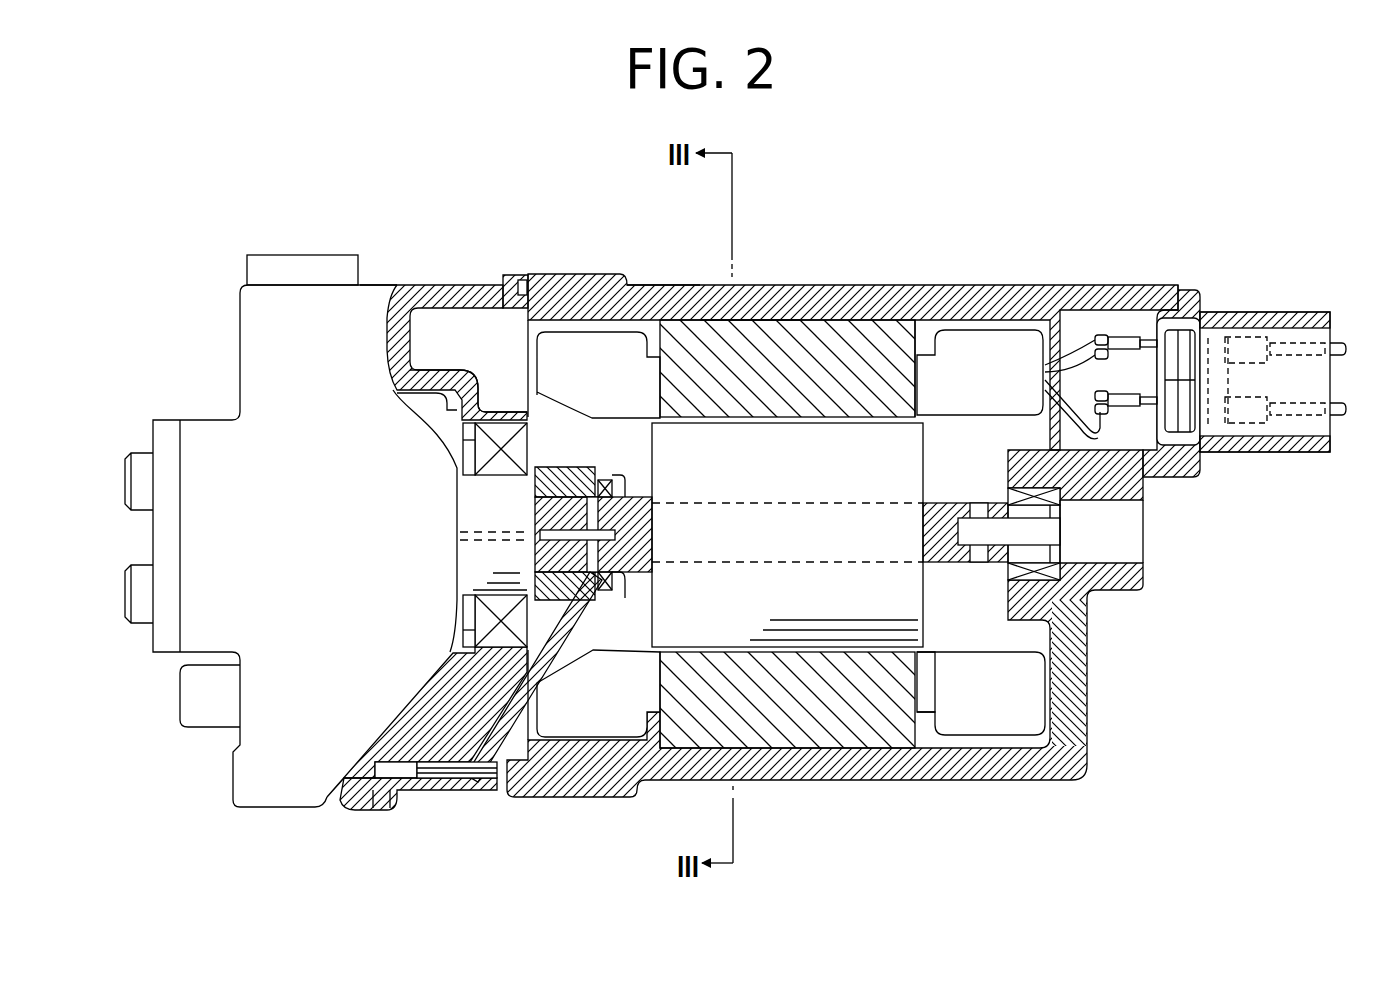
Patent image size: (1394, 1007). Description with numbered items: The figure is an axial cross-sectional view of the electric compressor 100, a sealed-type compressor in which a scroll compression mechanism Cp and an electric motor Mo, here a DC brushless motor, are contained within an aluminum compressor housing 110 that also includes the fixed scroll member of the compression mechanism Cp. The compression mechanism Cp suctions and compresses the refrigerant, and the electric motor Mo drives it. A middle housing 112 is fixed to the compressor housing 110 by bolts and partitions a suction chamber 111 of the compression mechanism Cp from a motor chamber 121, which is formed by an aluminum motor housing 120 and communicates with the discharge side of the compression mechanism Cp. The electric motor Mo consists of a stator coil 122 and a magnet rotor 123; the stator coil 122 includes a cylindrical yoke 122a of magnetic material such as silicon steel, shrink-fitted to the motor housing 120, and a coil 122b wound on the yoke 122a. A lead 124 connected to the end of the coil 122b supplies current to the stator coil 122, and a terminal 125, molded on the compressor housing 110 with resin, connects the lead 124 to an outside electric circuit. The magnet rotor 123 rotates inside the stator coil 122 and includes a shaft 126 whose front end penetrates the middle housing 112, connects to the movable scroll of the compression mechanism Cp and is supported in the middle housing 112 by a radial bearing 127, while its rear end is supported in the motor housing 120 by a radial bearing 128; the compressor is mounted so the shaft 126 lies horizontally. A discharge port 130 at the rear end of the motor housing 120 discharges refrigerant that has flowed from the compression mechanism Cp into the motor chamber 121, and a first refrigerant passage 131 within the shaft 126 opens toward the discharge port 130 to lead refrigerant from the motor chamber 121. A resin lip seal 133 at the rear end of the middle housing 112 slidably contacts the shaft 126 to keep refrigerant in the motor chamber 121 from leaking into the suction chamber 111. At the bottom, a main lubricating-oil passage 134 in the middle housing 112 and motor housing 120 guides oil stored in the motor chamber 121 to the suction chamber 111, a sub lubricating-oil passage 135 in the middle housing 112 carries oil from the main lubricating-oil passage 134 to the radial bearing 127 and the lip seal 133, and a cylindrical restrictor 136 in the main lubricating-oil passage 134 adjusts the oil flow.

The electric compressor 100 is at (659, 270).
The compressor housing 110 is at (290, 285).
The suction chamber 111 is at (487, 290).
The middle housing 112 is at (428, 290).
The motor housing 120 is at (703, 285).
The motor chamber 121 is at (578, 415).
The stator coil 122 is at (849, 333).
The cylindrical yoke 122a is at (815, 335).
The coil 122b is at (987, 348).
The magnet rotor 123 is at (748, 437).
The lead 124 is at (1165, 380).
The terminal 125 is at (1345, 410).
The shaft 126 is at (920, 672).
The radial bearing 127 is at (545, 745).
The radial bearing 128 is at (1053, 572).
The discharge port 130 is at (1127, 533).
The first refrigerant passage 131 is at (977, 540).
The lip seal 133 is at (606, 600).
The main lubricating-oil passage 134 is at (397, 770).
The sub lubricating-oil passage 135 is at (490, 770).
The cylindrical restrictor 136 is at (440, 770).
The scroll compression mechanism Cp is at (375, 290).
The electric motor Mo is at (920, 335).